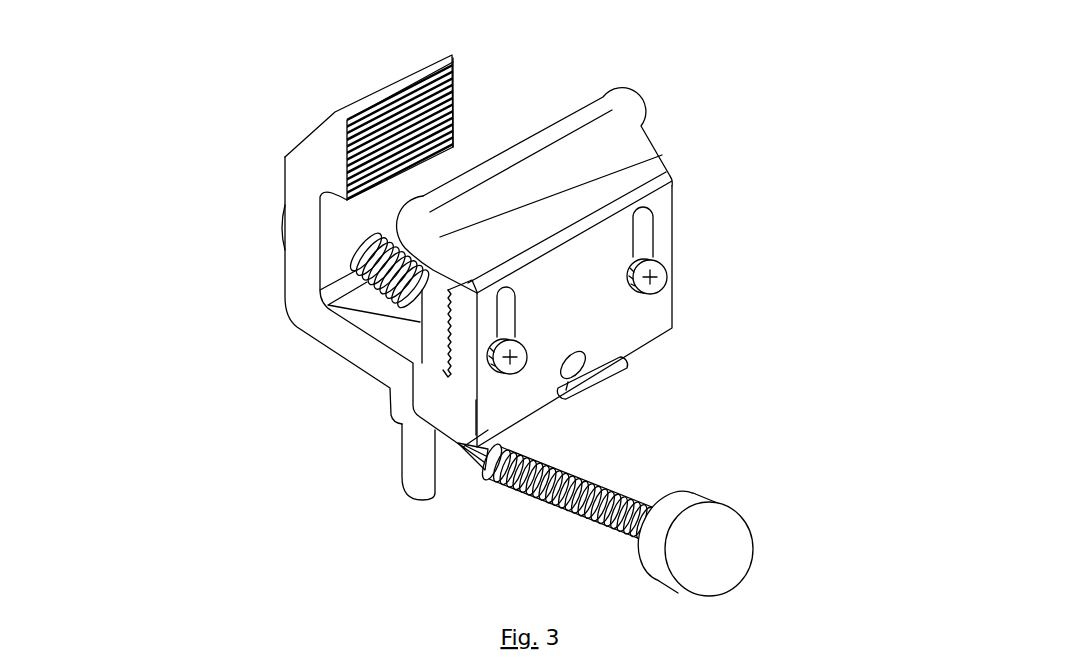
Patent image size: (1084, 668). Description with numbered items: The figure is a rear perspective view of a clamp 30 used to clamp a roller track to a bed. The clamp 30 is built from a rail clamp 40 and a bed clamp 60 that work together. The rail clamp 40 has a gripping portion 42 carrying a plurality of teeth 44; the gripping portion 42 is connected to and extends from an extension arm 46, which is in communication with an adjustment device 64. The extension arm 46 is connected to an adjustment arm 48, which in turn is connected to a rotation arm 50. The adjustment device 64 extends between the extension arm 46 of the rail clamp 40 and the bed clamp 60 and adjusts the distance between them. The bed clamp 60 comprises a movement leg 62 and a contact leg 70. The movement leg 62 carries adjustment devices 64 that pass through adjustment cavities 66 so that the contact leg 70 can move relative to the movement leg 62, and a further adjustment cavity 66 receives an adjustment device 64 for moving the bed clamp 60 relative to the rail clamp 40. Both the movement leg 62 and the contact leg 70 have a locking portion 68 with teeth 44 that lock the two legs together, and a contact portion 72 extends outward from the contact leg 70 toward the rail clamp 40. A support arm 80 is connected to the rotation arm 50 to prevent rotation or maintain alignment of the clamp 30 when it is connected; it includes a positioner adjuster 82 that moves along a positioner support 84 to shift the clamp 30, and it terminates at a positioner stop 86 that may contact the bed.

The clamp 30 is at (143, 107).
The rail clamp 40 is at (285, 153).
The gripping portion 42 is at (470, 96).
The teeth 44 is at (462, 95).
The extension arm 46 is at (305, 228).
The adjustment arm 48 is at (378, 343).
The rotation arm 50 is at (420, 487).
The bed clamp 60 is at (750, 108).
The movement leg 62 is at (430, 412).
The adjustment device 64 is at (420, 323).
The adjustment cavity 66 is at (520, 292).
The locking portion 68 is at (450, 373).
The contact leg 70 is at (682, 147).
The contact portion 72 is at (622, 122).
The support arm 80 is at (815, 483).
The positioner adjuster 82 is at (483, 467).
The positioner support 84 is at (580, 476).
The positioner stop 86 is at (750, 564).